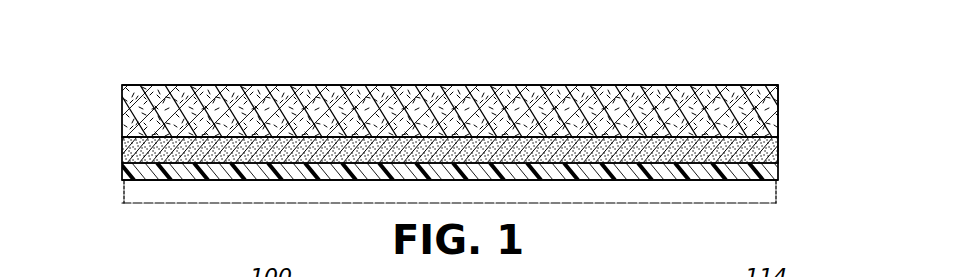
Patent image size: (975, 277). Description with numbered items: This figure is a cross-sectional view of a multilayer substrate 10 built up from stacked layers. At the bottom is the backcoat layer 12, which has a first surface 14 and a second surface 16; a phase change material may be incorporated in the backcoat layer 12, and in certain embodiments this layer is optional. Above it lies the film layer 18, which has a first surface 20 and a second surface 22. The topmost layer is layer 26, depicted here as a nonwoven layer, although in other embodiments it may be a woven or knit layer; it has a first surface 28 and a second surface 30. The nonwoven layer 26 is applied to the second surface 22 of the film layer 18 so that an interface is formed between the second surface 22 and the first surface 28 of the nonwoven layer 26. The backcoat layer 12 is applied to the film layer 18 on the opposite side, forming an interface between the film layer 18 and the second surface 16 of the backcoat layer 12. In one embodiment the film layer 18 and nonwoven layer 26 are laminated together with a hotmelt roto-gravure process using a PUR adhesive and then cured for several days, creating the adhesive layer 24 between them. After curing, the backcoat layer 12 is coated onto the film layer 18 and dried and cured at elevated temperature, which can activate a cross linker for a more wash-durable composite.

The multilayer substrate 10 is at (372, 71).
The backcoat layer 12 is at (139, 204).
The first surface of backcoat layer 14 is at (757, 205).
The second surface of backcoat layer 16 is at (776, 181).
The film layer 18 is at (780, 170).
The first surface of film layer 20 is at (122, 160).
The second surface of film layer 22 is at (125, 131).
The adhesive layer 24 is at (778, 152).
The nonwoven layer 26 is at (155, 85).
The first surface of nonwoven layer 28 is at (778, 97).
The second surface of nonwoven layer 30 is at (703, 85).